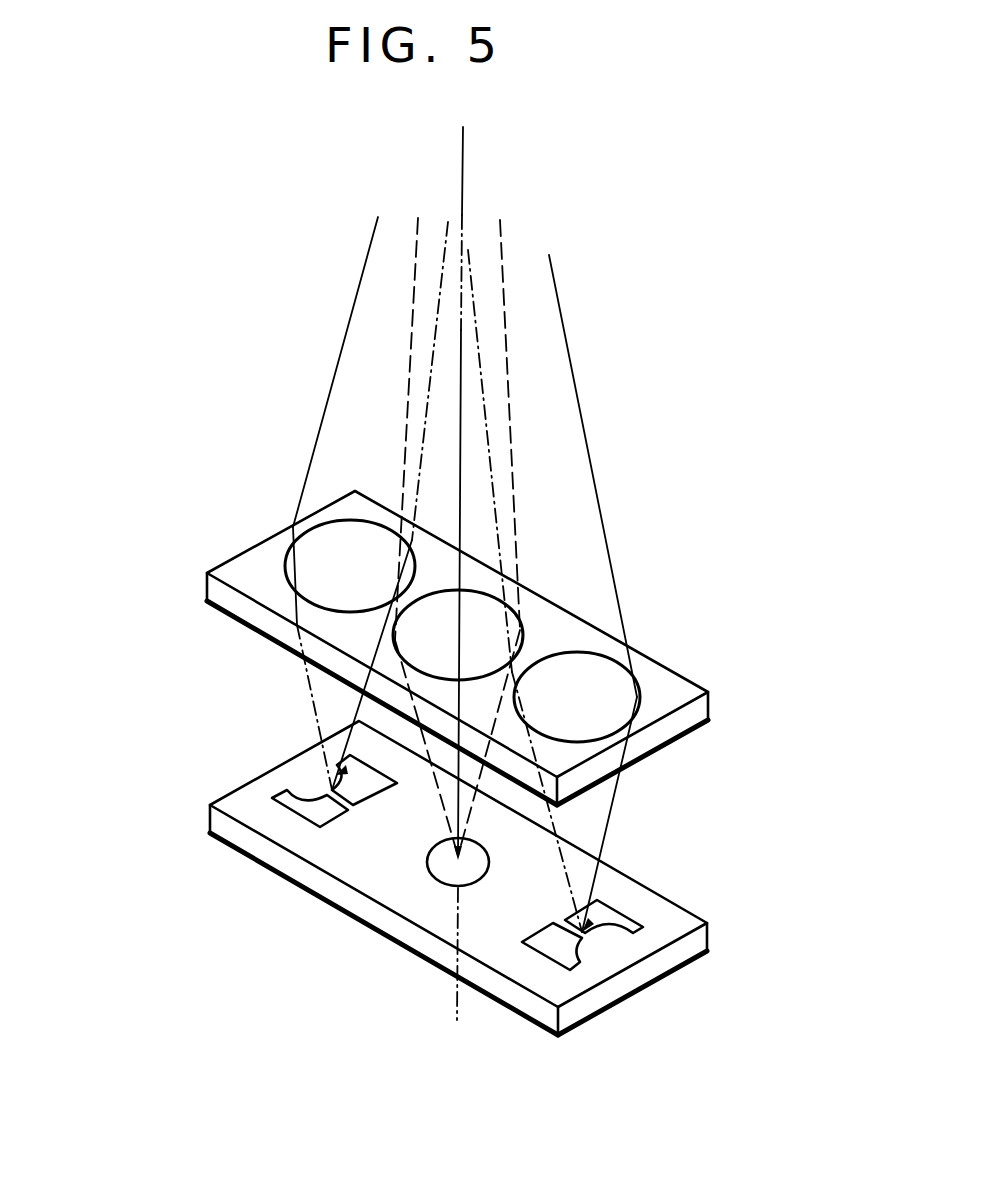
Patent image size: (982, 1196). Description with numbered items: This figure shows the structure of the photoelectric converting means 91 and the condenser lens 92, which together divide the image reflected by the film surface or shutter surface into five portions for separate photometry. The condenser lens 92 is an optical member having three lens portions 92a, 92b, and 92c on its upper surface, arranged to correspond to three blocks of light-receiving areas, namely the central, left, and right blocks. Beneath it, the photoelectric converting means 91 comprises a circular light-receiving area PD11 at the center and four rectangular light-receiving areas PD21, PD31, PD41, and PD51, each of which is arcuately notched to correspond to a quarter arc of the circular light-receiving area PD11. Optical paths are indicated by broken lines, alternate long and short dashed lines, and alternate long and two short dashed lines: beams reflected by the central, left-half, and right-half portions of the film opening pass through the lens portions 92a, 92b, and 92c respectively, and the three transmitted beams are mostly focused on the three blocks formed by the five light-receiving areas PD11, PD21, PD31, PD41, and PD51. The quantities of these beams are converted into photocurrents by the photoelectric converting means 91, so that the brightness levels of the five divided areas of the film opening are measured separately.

The photoelectric converting means 91 is at (245, 850).
The condenser lens 92 is at (207, 590).
The lens portion 92a is at (510, 612).
The lens portion 92b is at (305, 537).
The lens portion 92c is at (618, 675).
The circular light-receiving area PD11 is at (445, 876).
The rectangular light-receiving area PD21 is at (340, 765).
The rectangular light-receiving area PD31 is at (287, 797).
The rectangular light-receiving area PD41 is at (625, 922).
The rectangular light-receiving area PD51 is at (560, 960).